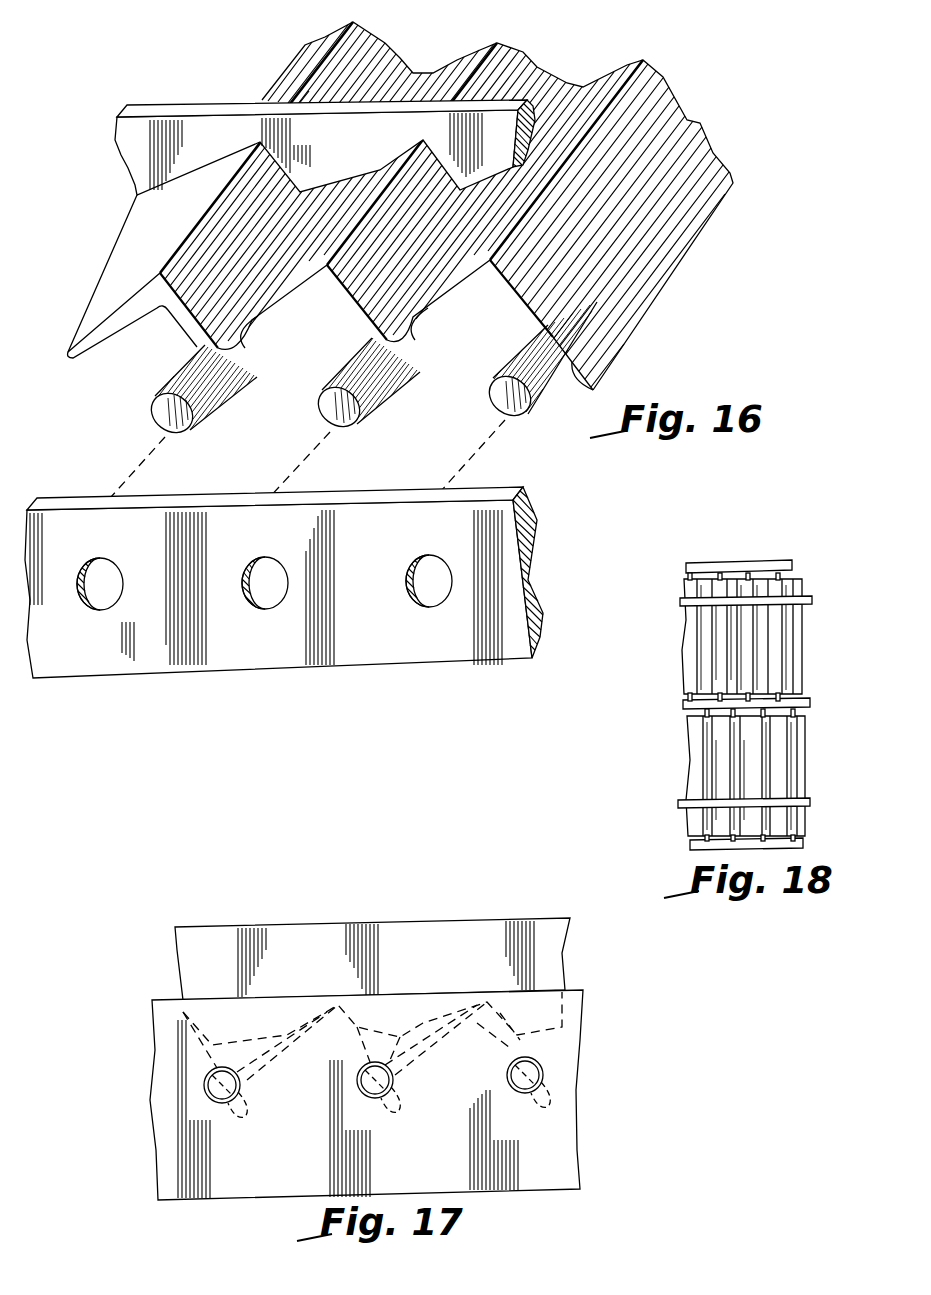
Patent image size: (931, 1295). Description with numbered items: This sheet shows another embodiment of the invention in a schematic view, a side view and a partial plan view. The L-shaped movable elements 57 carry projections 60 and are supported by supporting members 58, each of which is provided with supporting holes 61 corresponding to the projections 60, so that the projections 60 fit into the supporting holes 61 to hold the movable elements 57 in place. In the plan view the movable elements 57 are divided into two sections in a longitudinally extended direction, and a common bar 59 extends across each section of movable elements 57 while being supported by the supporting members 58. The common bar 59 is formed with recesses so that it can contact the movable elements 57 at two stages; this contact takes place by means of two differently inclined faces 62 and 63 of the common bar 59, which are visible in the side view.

In FIG. 16, the L-shaped movable element 57 is at (528, 307).
In FIG. 18, the L-shaped movable element 57 is at (795, 660).
In FIG. 17, the L-shaped movable element 57 is at (562, 1046).
In FIG. 16, the supporting member 58 is at (520, 620).
In FIG. 18, the supporting member 58 is at (793, 567).
In FIG. 17, the supporting member 58 is at (560, 1158).
In FIG. 16, the common bar 59 is at (350, 104).
In FIG. 18, the common bar 59 is at (810, 602).
In FIG. 17, the common bar 59 is at (403, 930).
In FIG. 16, the projection 60 is at (323, 378).
In FIG. 18, the projection 60 is at (746, 571).
In FIG. 17, the projection 60 is at (514, 1093).
In FIG. 16, the supporting hole 61 is at (87, 598).
In FIG. 17, the supporting hole 61 is at (513, 1070).
In FIG. 16, the inclined face 62 is at (385, 173).
In FIG. 17, the inclined face 62 is at (443, 1027).
In FIG. 16, the inclined face 63 is at (332, 190).
In FIG. 17, the inclined face 63 is at (387, 1037).